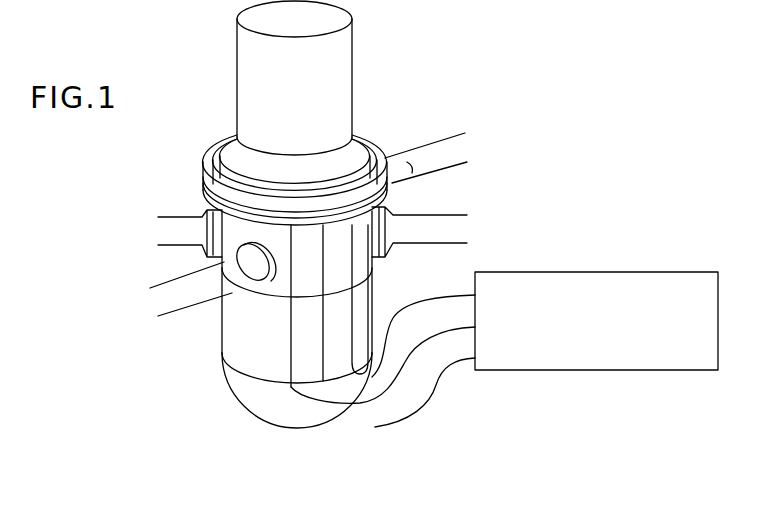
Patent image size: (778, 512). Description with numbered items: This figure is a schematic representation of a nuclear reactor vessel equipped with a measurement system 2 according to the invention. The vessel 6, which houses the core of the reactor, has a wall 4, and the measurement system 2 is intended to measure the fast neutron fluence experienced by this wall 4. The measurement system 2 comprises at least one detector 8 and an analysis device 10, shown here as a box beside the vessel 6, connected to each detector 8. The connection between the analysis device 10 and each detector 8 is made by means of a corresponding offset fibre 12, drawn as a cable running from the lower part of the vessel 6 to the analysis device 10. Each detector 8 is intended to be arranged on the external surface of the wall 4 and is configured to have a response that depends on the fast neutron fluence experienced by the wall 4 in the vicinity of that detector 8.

The measurement system 2 is at (598, 165).
The wall 4 is at (255, 355).
The vessel 6 is at (184, 350).
The detector 8 is at (356, 305).
The analysis device 10 is at (602, 327).
The offset fibre 12 is at (415, 417).